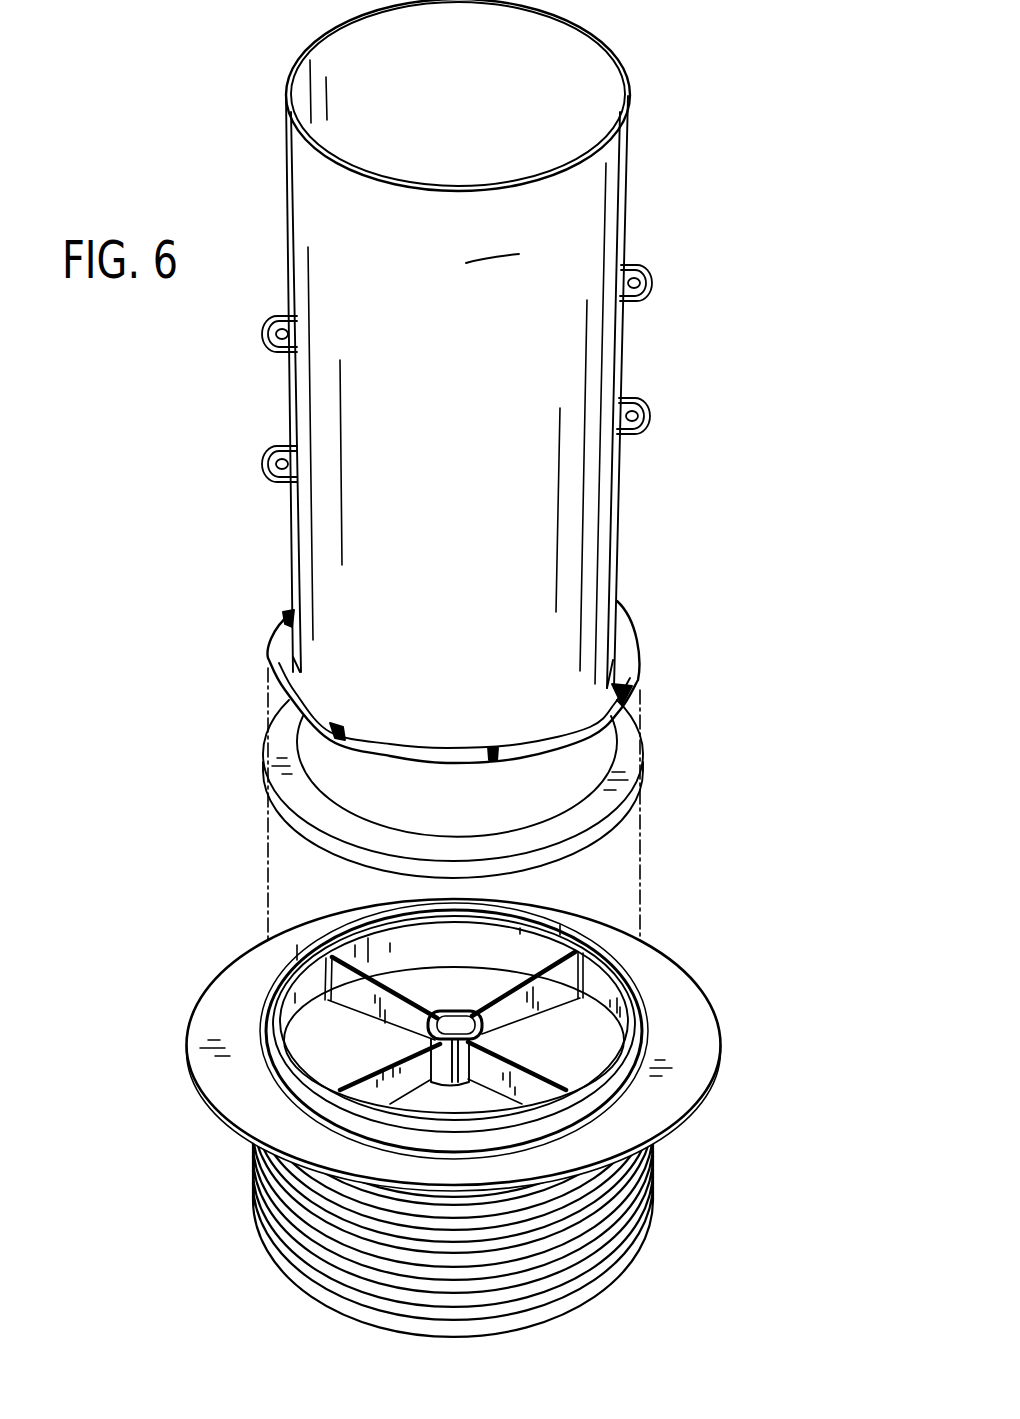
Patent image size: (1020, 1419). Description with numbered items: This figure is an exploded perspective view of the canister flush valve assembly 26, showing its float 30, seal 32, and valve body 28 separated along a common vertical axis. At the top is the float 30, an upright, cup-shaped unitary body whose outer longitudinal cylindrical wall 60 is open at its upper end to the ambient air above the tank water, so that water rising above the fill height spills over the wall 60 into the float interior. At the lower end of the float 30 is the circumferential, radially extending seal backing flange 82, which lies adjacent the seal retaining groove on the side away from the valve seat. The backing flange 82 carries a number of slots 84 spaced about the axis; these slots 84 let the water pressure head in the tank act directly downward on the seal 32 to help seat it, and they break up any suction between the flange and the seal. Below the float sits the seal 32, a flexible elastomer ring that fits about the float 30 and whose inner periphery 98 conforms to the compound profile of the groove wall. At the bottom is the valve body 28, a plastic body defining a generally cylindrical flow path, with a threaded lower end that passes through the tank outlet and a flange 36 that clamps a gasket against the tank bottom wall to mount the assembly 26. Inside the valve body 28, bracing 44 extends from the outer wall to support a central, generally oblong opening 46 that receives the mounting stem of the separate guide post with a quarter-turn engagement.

The flush valve assembly 26 is at (709, 105).
The float 30 is at (626, 523).
The outer longitudinal cylindrical wall 60 is at (464, 479).
The seal backing flange 82 is at (278, 671).
The slots 84 is at (289, 616).
The seal 32 is at (633, 764).
The inner periphery 98 is at (472, 845).
The valve body 28 is at (730, 1038).
The flange 36 is at (690, 1008).
The bracing 44 is at (510, 1020).
The central opening 46 is at (446, 1018).